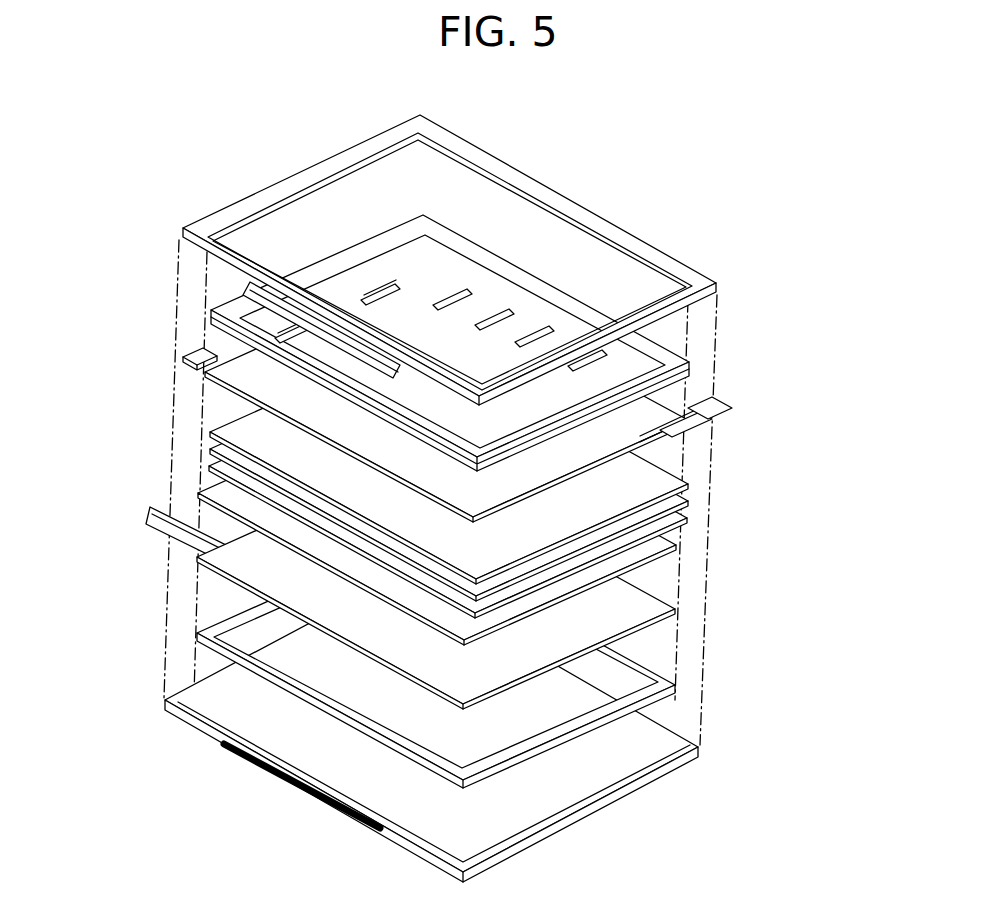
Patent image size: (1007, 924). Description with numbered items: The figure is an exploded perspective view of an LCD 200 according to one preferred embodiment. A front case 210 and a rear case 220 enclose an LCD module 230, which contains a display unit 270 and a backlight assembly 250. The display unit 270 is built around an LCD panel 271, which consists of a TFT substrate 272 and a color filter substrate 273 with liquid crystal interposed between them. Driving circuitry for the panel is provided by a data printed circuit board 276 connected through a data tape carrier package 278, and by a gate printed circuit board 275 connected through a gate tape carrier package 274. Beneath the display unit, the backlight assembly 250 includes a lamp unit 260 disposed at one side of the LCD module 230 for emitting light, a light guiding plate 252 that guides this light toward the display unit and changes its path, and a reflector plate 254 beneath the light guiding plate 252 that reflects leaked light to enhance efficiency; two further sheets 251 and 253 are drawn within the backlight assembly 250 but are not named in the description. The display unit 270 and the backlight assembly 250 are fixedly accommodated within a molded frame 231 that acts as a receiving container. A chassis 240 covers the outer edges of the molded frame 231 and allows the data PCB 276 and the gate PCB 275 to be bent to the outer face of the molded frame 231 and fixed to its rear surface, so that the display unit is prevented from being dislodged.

The LCD 200 is at (680, 157).
The front case 210 is at (548, 183).
The rear case 220 is at (593, 812).
The LCD module 230 is at (110, 637).
The molded frame 231 is at (673, 683).
The chassis 240 is at (673, 351).
The backlight assembly 250 is at (740, 478).
The diffusion sheet 251 is at (450, 688).
The light guiding plate 252 is at (587, 595).
The protection sheet 253 is at (680, 492).
The reflector plate 254 is at (657, 622).
The lamp unit 260 is at (157, 533).
The display unit 270 is at (775, 390).
The LCD panel 271 is at (673, 439).
The TFT substrate 272 is at (620, 432).
The color filter substrate 273 is at (690, 402).
The gate tape carrier package 274 is at (200, 345).
The gate printed circuit board 275 is at (212, 337).
The data printed circuit board 276 is at (415, 268).
The data tape carrier package 278 is at (463, 287).